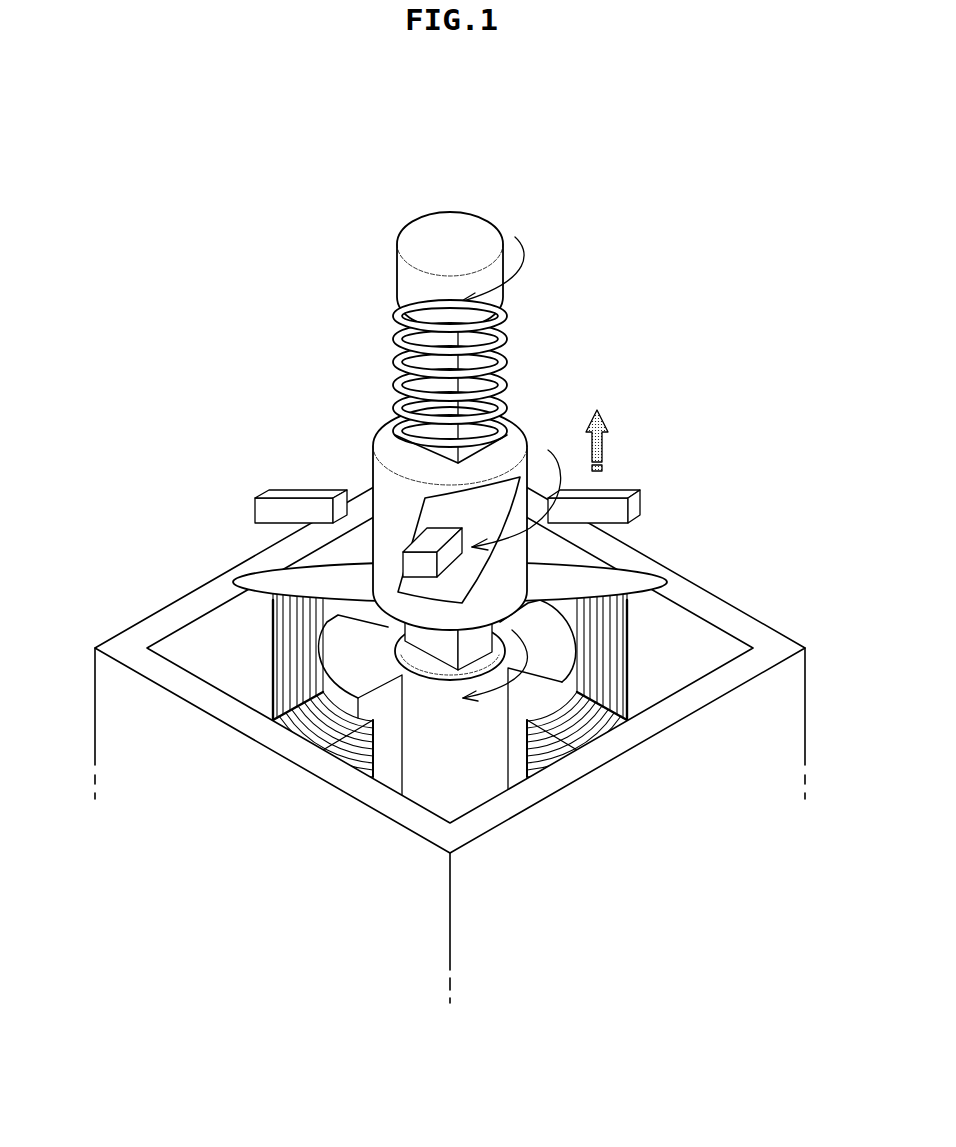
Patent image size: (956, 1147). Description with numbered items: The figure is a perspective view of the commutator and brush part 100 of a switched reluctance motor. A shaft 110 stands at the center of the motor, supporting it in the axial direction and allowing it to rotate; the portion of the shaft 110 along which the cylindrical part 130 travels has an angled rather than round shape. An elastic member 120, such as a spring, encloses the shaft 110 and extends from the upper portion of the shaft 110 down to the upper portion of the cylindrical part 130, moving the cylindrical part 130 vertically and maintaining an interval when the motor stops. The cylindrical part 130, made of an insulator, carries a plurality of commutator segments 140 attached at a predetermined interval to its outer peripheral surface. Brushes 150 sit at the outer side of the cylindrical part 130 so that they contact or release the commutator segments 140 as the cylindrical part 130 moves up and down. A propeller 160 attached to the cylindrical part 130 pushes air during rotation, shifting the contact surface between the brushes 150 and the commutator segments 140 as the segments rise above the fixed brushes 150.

The commutator and brush part 100 is at (354, 118).
The shaft 110 is at (410, 288).
The elastic member 120 is at (398, 363).
The cylindrical part 130 is at (385, 437).
The commutator segments 140 is at (475, 570).
The brushes 150 is at (633, 507).
The propeller 160 is at (665, 582).